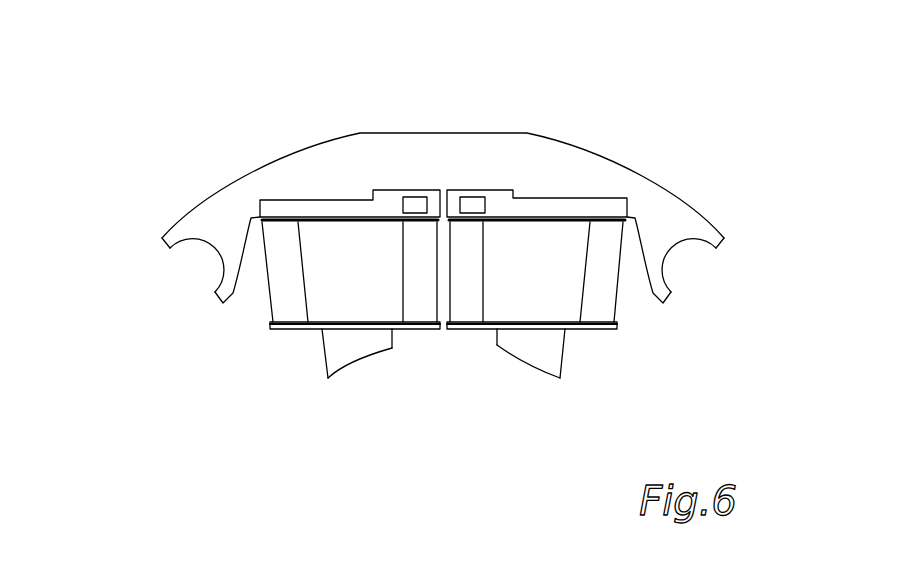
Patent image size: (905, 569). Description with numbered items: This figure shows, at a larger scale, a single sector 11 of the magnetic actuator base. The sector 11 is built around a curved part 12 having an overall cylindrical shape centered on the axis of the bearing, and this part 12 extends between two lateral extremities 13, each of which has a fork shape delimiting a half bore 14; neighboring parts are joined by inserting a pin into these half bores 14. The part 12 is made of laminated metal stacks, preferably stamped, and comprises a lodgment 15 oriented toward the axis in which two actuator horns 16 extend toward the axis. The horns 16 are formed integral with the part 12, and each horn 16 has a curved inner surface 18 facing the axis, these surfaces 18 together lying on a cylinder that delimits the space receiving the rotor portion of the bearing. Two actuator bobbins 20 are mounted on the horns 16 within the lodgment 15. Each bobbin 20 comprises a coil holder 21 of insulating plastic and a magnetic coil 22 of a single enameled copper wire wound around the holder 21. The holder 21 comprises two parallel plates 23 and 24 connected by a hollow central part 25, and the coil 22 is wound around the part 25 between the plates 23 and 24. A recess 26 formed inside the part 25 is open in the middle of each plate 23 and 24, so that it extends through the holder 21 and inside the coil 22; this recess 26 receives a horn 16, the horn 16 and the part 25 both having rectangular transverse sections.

The sector 11 is at (545, 87).
The curved part 12 is at (423, 150).
The lateral extremity 13 is at (202, 230).
The half bore 14 is at (205, 252).
The lodgment 15 is at (352, 202).
The actuator horn 16 is at (445, 392).
The curved inner surface 18 is at (358, 367).
The actuator bobbin 20 is at (238, 358).
The coil holder 21 is at (589, 225).
The magnetic coil 22 is at (542, 247).
The plate 23 is at (615, 202).
The plate 24 is at (597, 329).
The hollow central part 25 is at (547, 295).
The recess 26 is at (511, 330).